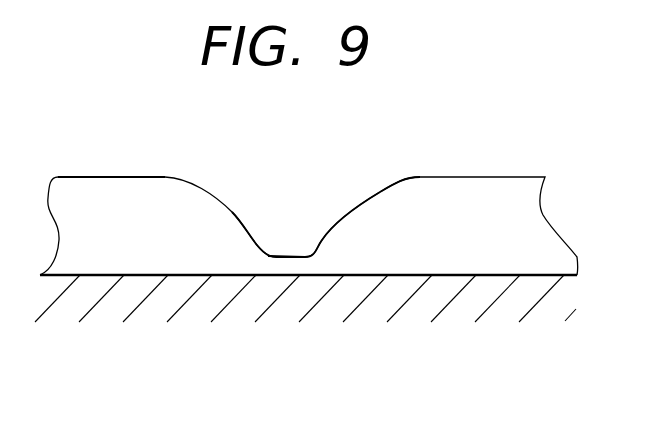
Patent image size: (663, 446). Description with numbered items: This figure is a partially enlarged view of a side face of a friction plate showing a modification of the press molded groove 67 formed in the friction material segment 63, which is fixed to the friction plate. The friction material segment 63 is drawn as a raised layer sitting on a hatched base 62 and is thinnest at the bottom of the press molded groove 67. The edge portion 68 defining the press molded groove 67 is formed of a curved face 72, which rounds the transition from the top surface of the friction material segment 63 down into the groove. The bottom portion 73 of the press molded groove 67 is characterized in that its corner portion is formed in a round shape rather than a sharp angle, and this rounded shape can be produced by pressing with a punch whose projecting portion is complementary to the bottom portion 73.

The substrate 62 is at (435, 305).
The friction material segment 63 is at (486, 187).
The press molded groove 67 is at (302, 203).
The edge portion 68 is at (407, 172).
The curved face 72 is at (186, 177).
The bottom portion 73 is at (278, 256).